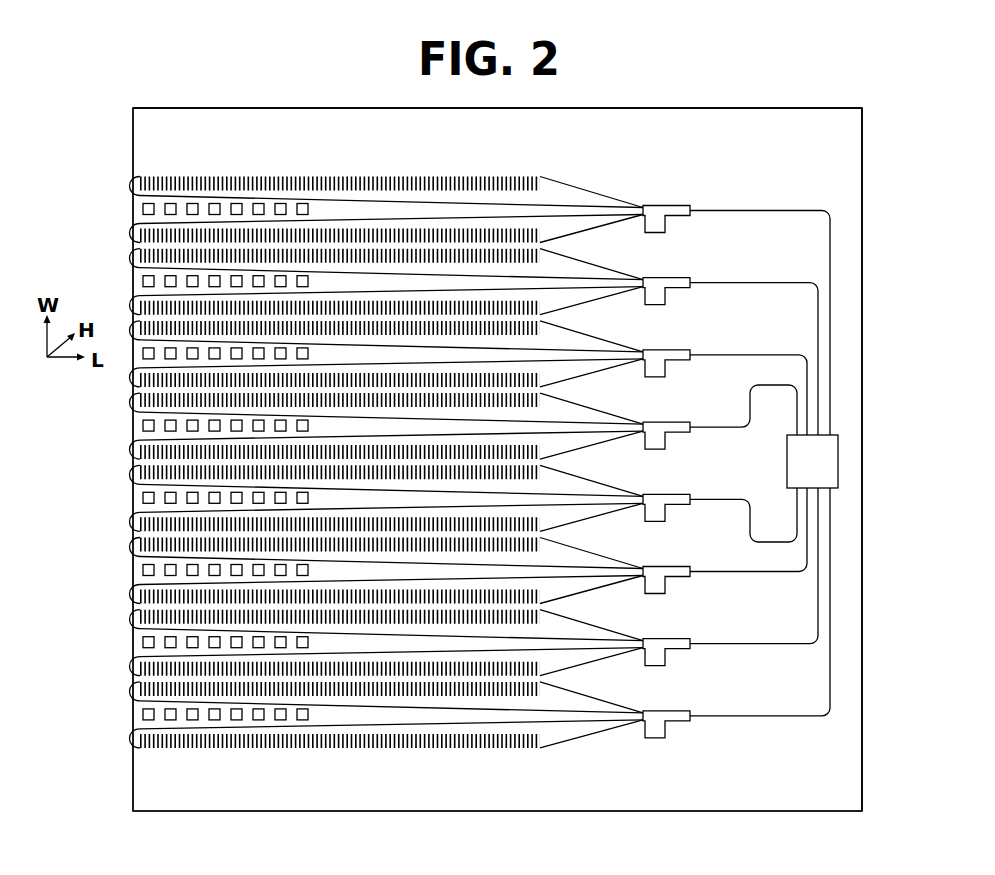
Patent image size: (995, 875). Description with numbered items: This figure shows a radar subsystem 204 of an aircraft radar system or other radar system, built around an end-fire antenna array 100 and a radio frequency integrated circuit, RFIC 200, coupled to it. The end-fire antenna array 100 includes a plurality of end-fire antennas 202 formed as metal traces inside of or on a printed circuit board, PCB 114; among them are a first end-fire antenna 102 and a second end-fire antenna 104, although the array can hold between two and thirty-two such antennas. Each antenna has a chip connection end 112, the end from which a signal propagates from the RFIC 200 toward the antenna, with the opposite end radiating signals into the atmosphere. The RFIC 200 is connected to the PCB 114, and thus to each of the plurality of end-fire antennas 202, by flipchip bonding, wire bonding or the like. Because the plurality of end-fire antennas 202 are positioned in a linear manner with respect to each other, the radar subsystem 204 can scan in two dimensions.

The end-fire antenna array 100 is at (128, 160).
The first end-fire antenna 102 is at (588, 187).
The second end-fire antenna 104 is at (605, 264).
The chip connection end 112 is at (864, 200).
The printed circuit board 114 is at (779, 123).
The radio frequency integrated circuit 200 is at (838, 462).
The plurality of end-fire antennas 202 is at (439, 391).
The radar subsystem 204 is at (614, 90).